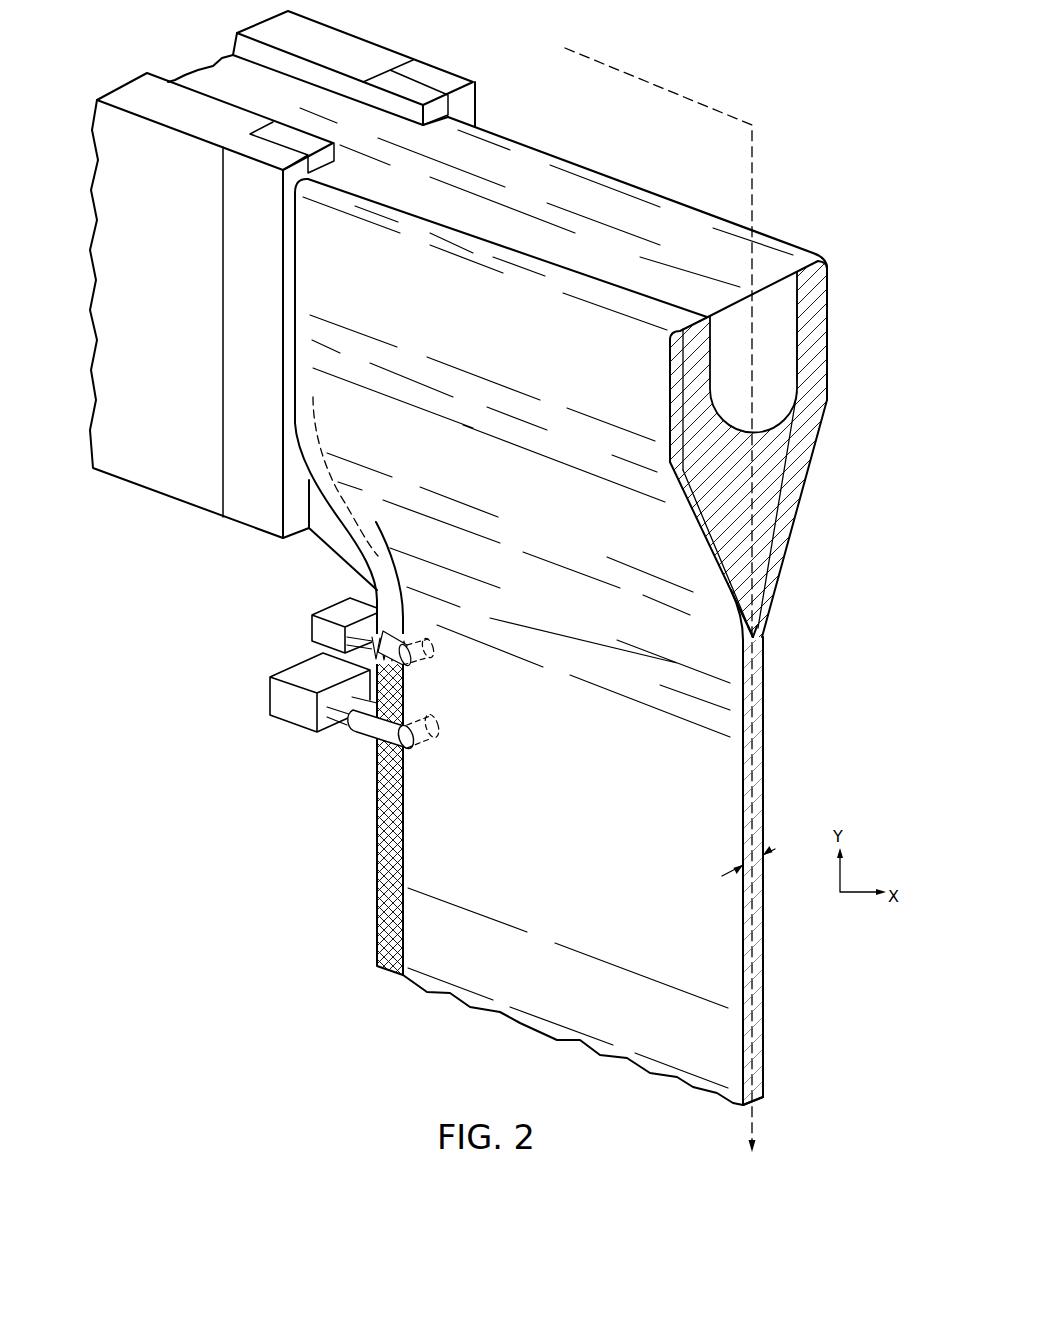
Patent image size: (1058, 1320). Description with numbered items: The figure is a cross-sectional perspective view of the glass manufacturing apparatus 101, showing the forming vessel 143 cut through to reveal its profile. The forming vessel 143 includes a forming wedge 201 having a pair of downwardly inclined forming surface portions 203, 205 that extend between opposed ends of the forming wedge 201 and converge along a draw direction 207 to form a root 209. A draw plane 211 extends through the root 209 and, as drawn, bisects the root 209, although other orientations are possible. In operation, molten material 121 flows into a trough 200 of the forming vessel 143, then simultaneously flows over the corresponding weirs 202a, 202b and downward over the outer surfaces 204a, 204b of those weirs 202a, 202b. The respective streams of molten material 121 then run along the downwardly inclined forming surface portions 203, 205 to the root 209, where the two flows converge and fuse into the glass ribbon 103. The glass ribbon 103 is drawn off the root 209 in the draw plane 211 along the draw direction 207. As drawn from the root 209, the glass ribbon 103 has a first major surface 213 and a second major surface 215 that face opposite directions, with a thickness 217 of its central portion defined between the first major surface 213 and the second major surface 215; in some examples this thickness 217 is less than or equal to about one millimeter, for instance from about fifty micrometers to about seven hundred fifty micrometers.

The glass manufacturing apparatus 101 is at (750, 80).
The forming vessel 143 is at (802, 183).
The draw plane 211 is at (756, 138).
The weir 202a is at (690, 320).
The weir 202b is at (810, 264).
The outer surface 204a is at (670, 385).
The outer surface 204b is at (830, 298).
The molten material 121 is at (788, 326).
The trough 200 is at (790, 362).
The forming wedge 201 is at (790, 451).
The downwardly inclined forming surface portion 205 is at (787, 561).
The downwardly inclined forming surface portion 203 is at (725, 582).
The root 209 is at (757, 637).
The glass ribbon 103 is at (728, 757).
The first major surface 213 is at (741, 786).
The second major surface 215 is at (768, 787).
The thickness 217 is at (775, 849).
The draw direction 207 is at (755, 1130).